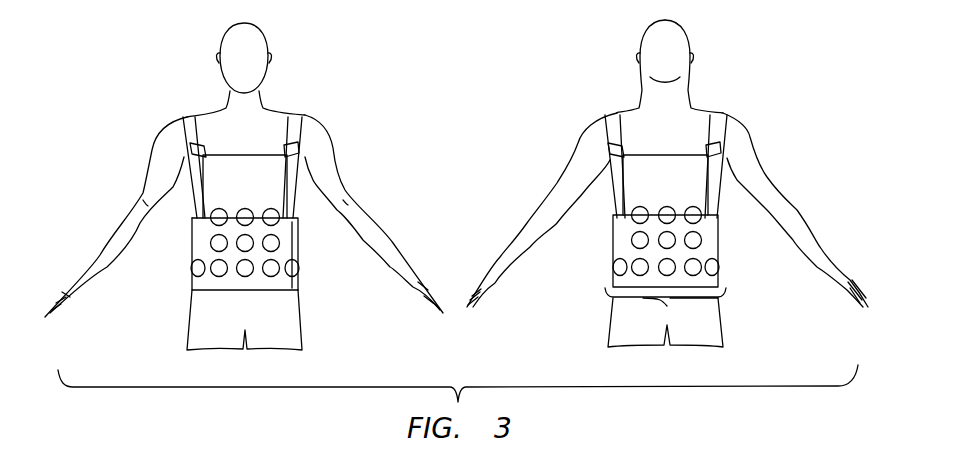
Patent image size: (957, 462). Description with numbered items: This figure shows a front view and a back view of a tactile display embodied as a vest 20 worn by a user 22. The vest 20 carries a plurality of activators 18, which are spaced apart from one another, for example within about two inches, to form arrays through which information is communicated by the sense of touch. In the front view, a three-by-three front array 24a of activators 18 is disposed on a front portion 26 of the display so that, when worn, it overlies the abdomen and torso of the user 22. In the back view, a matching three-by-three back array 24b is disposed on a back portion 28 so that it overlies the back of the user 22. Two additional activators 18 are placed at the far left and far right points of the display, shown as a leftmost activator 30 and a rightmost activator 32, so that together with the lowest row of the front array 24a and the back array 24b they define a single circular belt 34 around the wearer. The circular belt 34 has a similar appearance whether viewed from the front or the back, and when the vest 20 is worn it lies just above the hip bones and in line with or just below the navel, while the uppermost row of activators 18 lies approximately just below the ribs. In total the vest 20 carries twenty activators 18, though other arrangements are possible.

The activators 18 is at (219, 277).
The vest 20 is at (480, 237).
The user 22 is at (278, 107).
The front array 24a is at (253, 203).
The back array 24b is at (673, 202).
The front portion 26 is at (187, 243).
The back portion 28 is at (727, 232).
The leftmost activator 30 is at (303, 275).
The rightmost activator 32 is at (187, 278).
The circular belt 34 is at (667, 306).